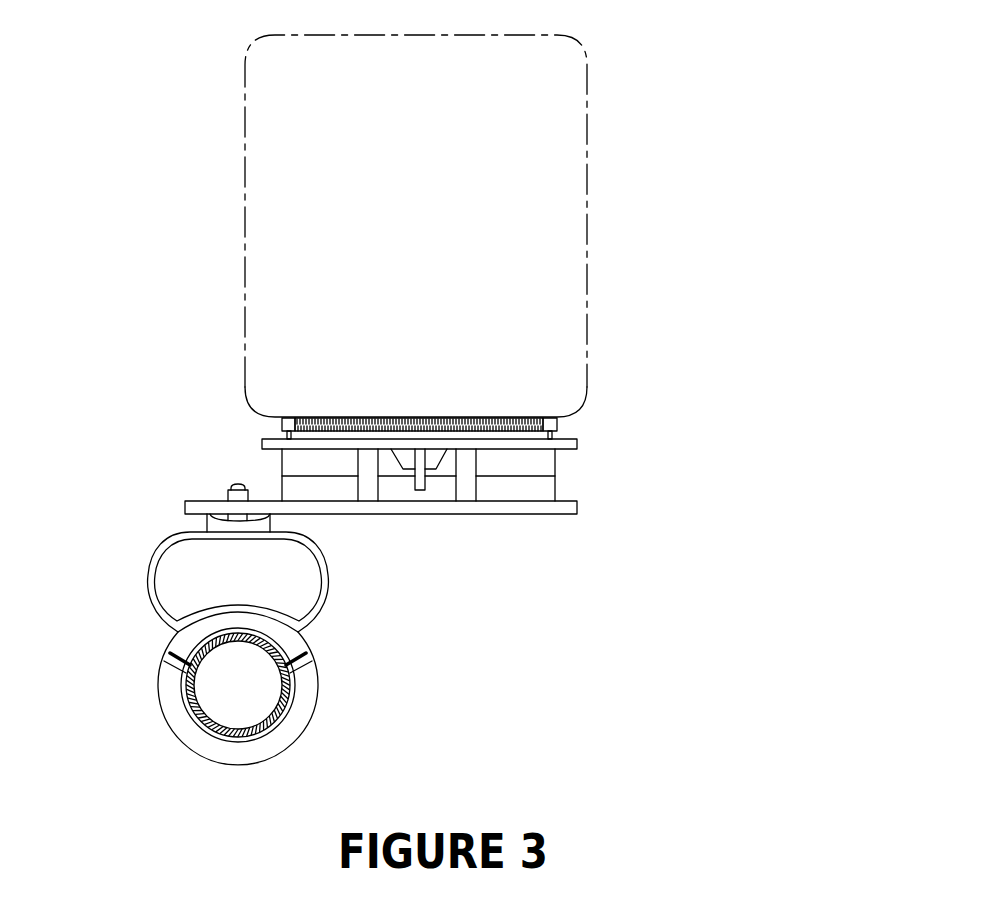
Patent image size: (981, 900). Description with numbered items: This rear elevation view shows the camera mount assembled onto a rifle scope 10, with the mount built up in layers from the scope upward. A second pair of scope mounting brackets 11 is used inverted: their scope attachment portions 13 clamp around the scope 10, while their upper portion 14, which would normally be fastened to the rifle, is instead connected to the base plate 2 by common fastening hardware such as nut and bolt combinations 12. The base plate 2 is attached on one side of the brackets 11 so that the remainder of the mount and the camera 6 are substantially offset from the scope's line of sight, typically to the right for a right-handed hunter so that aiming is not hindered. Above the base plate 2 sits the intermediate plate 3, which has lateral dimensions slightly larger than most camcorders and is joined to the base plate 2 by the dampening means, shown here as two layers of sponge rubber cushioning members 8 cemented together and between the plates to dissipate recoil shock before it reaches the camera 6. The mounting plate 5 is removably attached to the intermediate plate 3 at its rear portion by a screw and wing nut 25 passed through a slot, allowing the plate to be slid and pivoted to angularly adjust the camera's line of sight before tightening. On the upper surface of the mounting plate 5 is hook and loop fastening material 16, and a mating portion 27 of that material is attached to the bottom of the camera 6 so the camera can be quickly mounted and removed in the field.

The camera 6 is at (563, 153).
The mating portion of the fastening material 27 is at (505, 415).
The hook and loop fastening material 16 is at (548, 412).
The mounting plate 5 is at (550, 432).
The intermediate plate 3 is at (577, 445).
The cushioning members 8 is at (542, 464).
The wing nut 25 is at (418, 475).
The base plate 2 is at (387, 508).
The nut and bolt combinations 12 is at (230, 487).
The upper portion of scope mounting brackets 14 is at (202, 532).
The scope mounting brackets 11 is at (157, 595).
The scope 10 is at (187, 712).
The scope attachment portions 13 is at (297, 690).